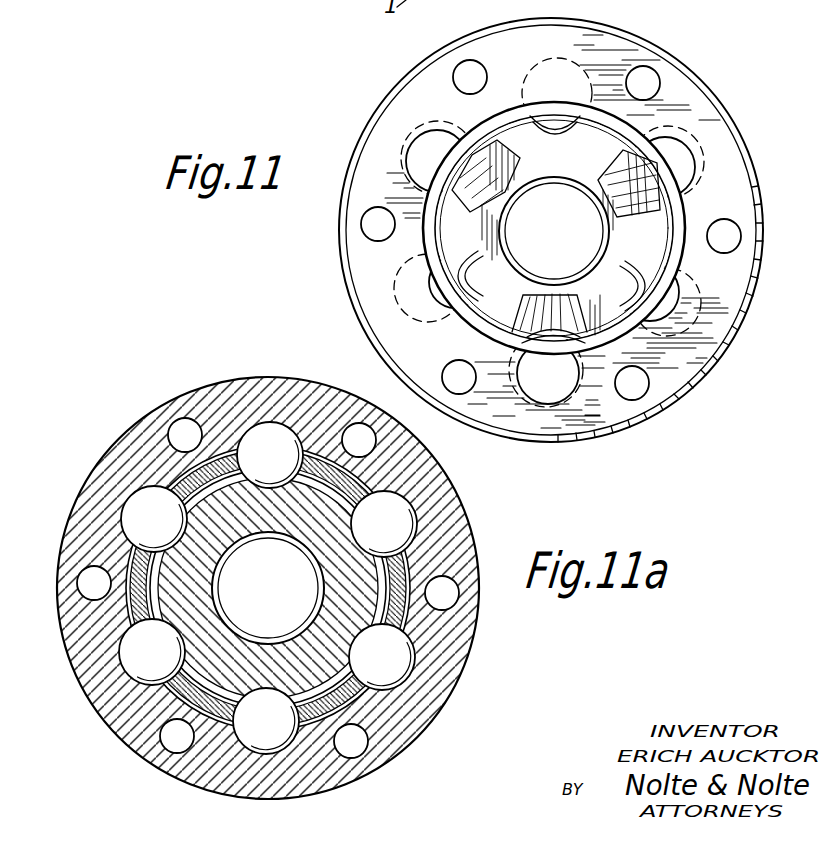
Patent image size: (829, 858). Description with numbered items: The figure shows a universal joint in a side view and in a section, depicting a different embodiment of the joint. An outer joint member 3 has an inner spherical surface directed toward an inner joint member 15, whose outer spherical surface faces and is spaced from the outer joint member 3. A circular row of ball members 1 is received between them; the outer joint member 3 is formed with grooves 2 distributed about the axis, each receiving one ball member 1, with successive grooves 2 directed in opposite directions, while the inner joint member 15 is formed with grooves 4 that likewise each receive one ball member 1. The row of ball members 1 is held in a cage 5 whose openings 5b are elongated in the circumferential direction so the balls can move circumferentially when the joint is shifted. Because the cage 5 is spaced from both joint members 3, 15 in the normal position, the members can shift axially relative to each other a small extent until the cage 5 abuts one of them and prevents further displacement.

In FIG. 11, the ball members 1 is at (683, 287).
In FIG. 11A, the ball members 1 is at (388, 517).
In FIG. 11, the grooves 2 is at (418, 140).
In FIG. 11A, the grooves 2 is at (147, 486).
In FIG. 11, the outer joint member 3 is at (680, 103).
In FIG. 11A, the outer joint member 3 is at (266, 392).
In FIG. 11, the grooves 4 is at (490, 192).
In FIG. 11A, the grooves 4 is at (370, 548).
In FIG. 11, the cage 5 is at (673, 227).
In FIG. 11A, the cage 5 is at (350, 700).
In FIG. 11A, the cage openings 5b is at (118, 648).
In FIG. 11, the inner joint member 15 is at (498, 272).
In FIG. 11A, the inner joint member 15 is at (200, 590).